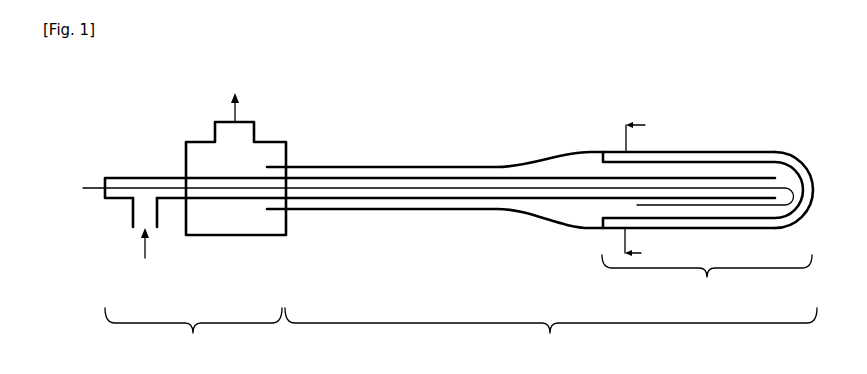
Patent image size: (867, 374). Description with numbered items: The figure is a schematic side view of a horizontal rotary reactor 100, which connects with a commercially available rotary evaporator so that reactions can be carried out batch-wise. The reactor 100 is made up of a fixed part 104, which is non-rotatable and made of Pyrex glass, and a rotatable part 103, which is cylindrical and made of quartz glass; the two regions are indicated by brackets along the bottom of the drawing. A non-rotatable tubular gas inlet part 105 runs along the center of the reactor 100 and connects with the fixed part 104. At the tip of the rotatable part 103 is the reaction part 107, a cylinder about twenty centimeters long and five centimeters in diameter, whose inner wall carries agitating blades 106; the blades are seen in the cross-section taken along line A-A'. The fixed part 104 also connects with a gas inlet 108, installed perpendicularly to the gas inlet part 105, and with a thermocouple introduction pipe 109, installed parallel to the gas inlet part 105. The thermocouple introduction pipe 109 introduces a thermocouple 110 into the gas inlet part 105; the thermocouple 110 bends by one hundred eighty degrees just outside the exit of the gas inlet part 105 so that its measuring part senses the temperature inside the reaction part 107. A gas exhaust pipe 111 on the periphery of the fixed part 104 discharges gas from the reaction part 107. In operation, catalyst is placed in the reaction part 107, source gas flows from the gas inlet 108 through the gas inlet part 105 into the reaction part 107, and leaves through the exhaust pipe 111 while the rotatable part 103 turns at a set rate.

The horizontal rotary reactor 100 is at (490, 106).
The rotatable part 103 is at (551, 337).
The fixed part 104 is at (193, 337).
The gas inlet part 105 is at (332, 167).
The agitating blades 106 is at (733, 158).
The reaction part 107 is at (707, 281).
The gas inlet 108 is at (131, 216).
The thermocouple introduction pipe 109 is at (118, 176).
The thermocouple 110 is at (427, 186).
The gas exhaust pipe 111 is at (213, 124).